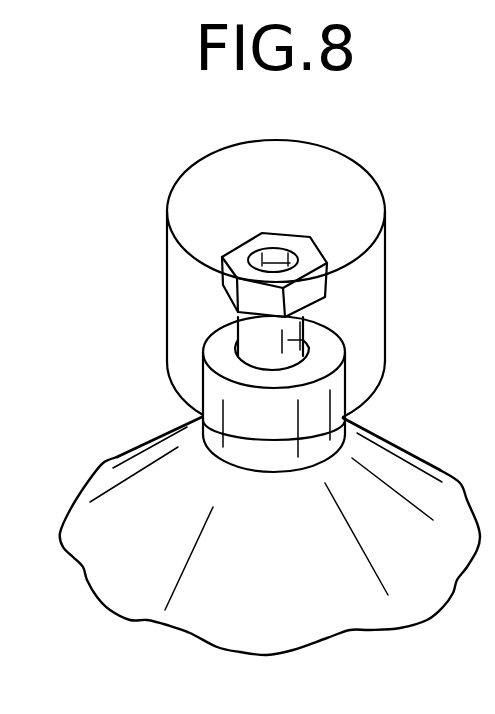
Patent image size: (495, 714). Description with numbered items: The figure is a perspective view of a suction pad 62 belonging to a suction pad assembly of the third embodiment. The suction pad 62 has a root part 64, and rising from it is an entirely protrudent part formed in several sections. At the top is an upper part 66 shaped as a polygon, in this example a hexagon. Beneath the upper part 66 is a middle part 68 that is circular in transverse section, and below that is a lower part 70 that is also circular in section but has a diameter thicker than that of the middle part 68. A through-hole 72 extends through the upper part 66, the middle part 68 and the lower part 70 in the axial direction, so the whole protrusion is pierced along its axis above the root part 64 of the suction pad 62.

The suction pad 62 is at (400, 357).
The root part 64 is at (210, 322).
The upper part 66 is at (313, 290).
The middle part 68 is at (297, 340).
The lower part 70 is at (350, 420).
The through-hole 72 is at (277, 260).